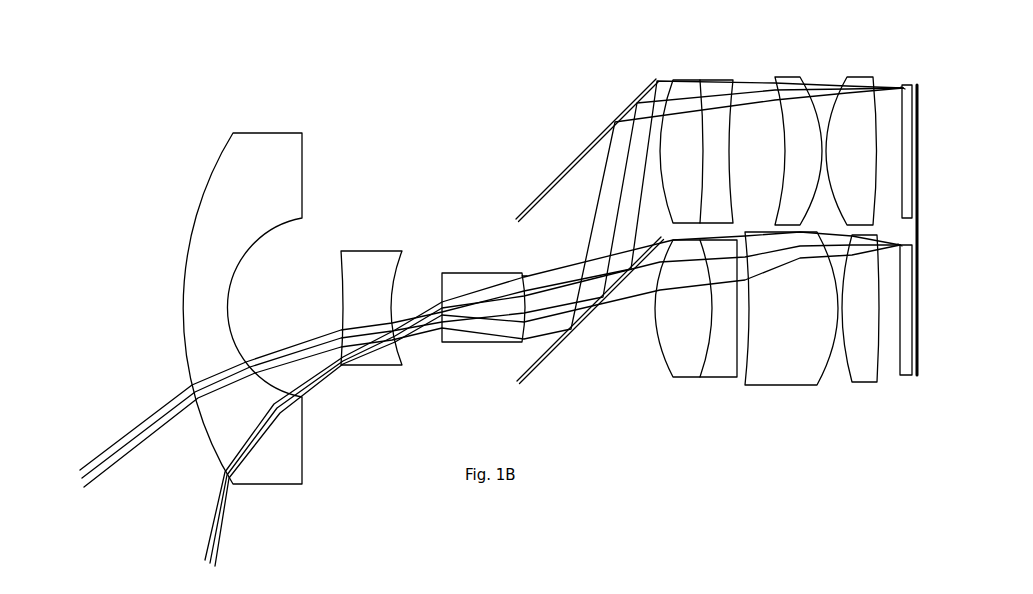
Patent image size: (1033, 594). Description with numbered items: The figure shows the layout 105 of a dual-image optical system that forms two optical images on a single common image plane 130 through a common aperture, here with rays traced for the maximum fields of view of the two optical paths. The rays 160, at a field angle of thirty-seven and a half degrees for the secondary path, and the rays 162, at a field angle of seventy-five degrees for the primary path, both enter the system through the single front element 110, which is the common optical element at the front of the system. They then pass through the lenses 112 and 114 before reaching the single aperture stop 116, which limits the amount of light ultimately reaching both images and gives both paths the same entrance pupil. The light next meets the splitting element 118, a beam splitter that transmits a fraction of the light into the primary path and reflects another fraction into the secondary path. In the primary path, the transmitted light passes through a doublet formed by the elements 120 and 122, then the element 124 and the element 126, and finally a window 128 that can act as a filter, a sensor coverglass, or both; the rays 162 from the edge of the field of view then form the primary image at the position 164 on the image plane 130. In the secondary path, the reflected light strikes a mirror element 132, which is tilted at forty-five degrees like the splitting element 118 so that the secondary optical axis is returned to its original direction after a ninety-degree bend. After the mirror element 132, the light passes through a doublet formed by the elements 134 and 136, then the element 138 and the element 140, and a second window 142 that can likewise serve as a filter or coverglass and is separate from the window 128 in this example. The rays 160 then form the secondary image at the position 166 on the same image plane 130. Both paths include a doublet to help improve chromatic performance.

The layout 105 is at (307, 303).
The single front element 110 is at (242, 308).
The lens 112 is at (371, 308).
The lens 114 is at (483, 307).
The aperture stop 116 is at (527, 276).
The splitting element 118 is at (590, 314).
The doublet element 120 is at (683, 308).
The doublet element 122 is at (718, 308).
The optical element 124 is at (791, 308).
The optical element 126 is at (860, 308).
The window 128 is at (907, 321).
The image plane 130 is at (918, 227).
The mirror element 132 is at (587, 150).
The doublet element 134 is at (681, 151).
The doublet element 136 is at (716, 151).
The optical element 138 is at (798, 151).
The optical element 140 is at (851, 151).
The window 142 is at (904, 141).
The rays 160 is at (472, 291).
The rays 162 is at (546, 407).
The edge image point 164 is at (924, 246).
The edge image point 166 is at (925, 89).